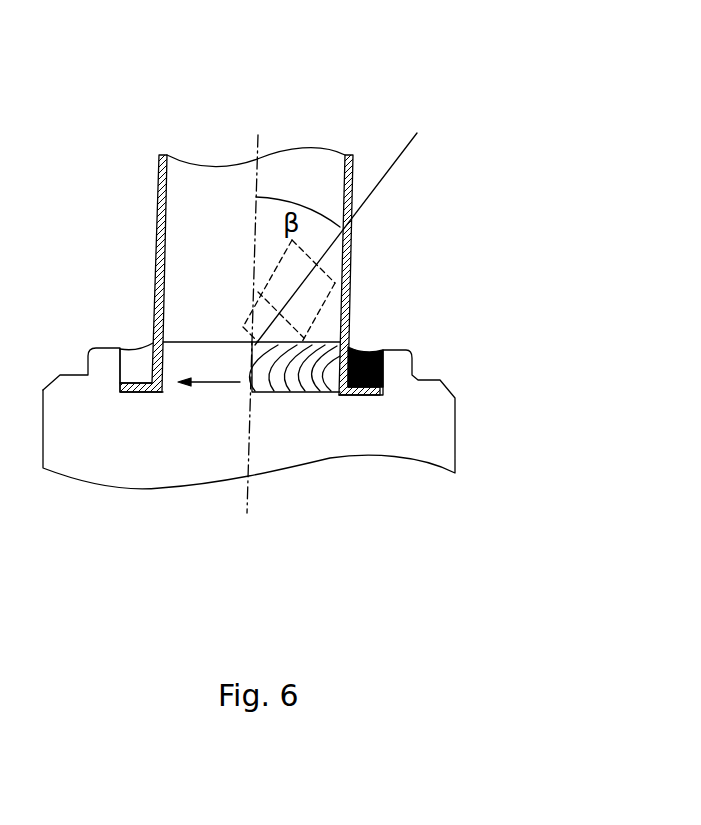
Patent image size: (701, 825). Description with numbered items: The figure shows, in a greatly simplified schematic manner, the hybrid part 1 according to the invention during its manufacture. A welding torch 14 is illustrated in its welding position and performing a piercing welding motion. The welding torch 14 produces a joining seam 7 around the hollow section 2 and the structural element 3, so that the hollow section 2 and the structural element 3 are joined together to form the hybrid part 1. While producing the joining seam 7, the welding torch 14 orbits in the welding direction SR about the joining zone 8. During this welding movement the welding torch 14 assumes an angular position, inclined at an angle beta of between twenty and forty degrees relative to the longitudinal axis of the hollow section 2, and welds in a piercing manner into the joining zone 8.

The hybrid part 1 is at (512, 85).
The hollow section 2 is at (350, 250).
The structural element 3 is at (418, 423).
The joining seam 7 is at (345, 333).
The joining zone 8 is at (135, 367).
The welding torch 14 is at (307, 293).
The welding direction SR is at (207, 384).